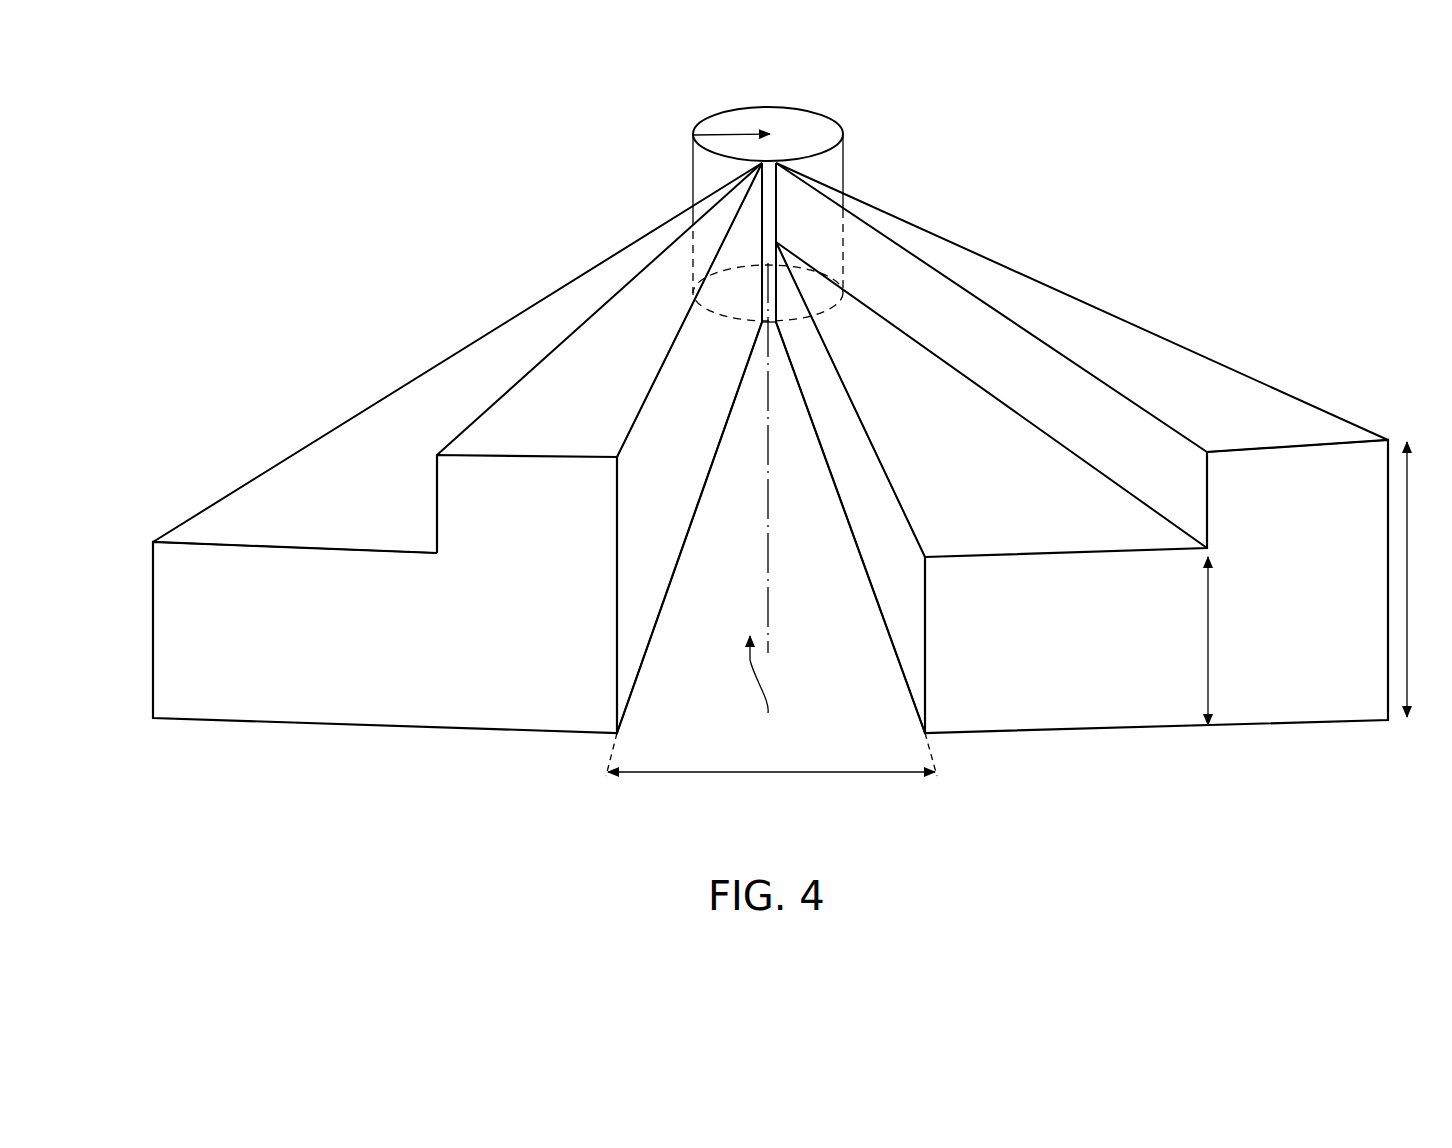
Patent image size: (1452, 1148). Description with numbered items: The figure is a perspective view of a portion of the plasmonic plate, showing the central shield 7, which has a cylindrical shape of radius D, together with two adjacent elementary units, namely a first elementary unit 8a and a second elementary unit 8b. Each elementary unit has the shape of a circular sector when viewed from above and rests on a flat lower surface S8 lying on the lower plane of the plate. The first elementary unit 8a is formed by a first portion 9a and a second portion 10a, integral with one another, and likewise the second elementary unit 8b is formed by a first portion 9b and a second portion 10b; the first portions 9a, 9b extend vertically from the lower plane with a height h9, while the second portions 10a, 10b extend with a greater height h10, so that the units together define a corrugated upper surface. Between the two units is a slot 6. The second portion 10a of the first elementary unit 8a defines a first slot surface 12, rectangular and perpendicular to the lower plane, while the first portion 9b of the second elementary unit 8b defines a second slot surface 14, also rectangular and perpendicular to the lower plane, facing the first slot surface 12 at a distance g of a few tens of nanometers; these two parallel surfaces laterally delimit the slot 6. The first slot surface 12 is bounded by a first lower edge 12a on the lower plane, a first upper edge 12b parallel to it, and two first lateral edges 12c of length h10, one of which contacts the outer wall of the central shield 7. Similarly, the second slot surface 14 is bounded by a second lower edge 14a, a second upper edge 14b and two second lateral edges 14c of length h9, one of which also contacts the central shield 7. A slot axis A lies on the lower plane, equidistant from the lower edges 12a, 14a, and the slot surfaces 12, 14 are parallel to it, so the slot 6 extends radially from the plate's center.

The slot 6 is at (761, 698).
The central shield 7 is at (815, 132).
The first elementary unit 8a is at (423, 335).
The second elementary unit 8b is at (1117, 258).
The first portion of the first elementary unit 9a is at (245, 612).
The first portion of the second elementary unit 9b is at (1028, 648).
The second portion of the first elementary unit 10a is at (608, 343).
The second portion of the second elementary unit 10b is at (1223, 395).
The first slot surface 12 is at (638, 558).
The first lower edge 12a is at (690, 525).
The first upper edge 12b is at (682, 327).
The first lateral edges 12c is at (760, 238).
The second slot surface 14 is at (902, 605).
The second lower edge 14a is at (853, 540).
The second upper edge 14b is at (850, 390).
The second lateral edges 14c is at (777, 240).
The slot axis A is at (770, 507).
The radius of the central shield D is at (731, 123).
The distance between slot surfaces g is at (771, 768).
The height of the first portions h9 is at (1225, 641).
The height of the second portions h10 is at (1428, 579).
The lower surface of the elementary unit S8 is at (350, 730).